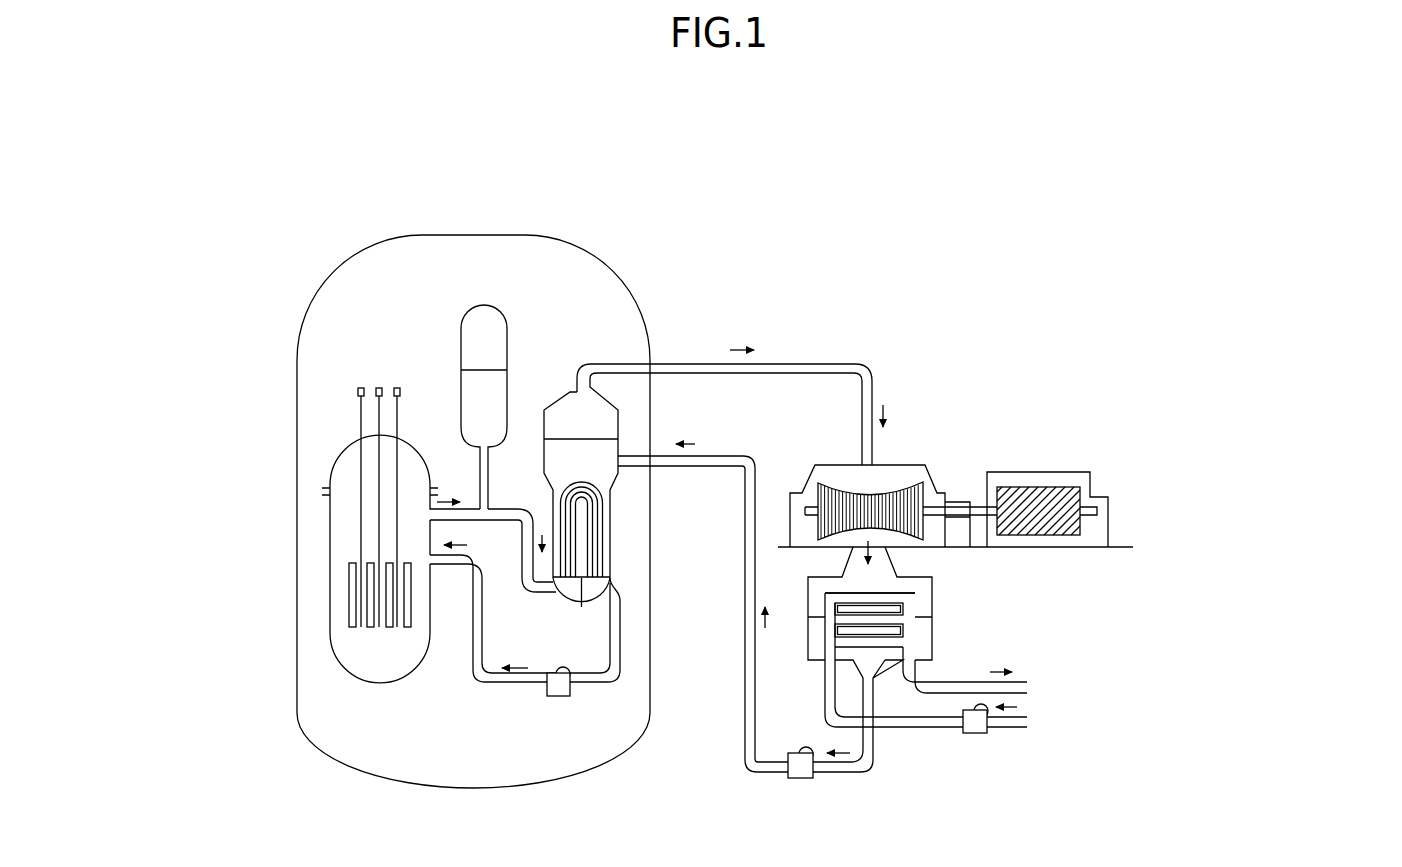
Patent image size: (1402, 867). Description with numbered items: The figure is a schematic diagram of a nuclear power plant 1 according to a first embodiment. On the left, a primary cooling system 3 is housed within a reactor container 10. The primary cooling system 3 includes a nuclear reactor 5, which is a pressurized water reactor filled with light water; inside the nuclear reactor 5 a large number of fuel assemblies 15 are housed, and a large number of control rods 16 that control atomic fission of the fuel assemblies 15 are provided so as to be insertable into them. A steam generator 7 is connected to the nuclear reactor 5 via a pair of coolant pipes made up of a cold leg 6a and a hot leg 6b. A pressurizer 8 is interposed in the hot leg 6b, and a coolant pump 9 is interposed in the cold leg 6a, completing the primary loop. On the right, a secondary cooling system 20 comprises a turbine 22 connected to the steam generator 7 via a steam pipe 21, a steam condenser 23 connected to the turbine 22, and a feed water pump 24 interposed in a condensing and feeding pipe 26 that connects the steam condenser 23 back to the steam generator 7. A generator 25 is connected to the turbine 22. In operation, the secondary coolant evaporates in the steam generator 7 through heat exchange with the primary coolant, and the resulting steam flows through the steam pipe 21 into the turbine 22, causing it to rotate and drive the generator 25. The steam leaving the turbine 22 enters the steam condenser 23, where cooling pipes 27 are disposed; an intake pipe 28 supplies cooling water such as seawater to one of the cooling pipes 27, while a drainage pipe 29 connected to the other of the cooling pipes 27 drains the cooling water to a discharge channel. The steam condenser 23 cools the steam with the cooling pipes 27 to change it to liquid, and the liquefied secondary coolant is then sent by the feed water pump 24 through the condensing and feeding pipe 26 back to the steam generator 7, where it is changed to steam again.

The nuclear power plant 1 is at (284, 133).
The reactor container 10 is at (378, 253).
The primary cooling system 3 is at (318, 349).
The nuclear reactor 5 is at (333, 460).
The control rods 16 is at (382, 410).
The fuel assemblies 15 is at (405, 630).
The pressurizer 8 is at (460, 330).
The steam generator 7 is at (563, 392).
The cold leg 6a is at (493, 686).
The hot leg 6b is at (518, 507).
The coolant pump 9 is at (558, 698).
The secondary cooling system 20 is at (944, 348).
The steam pipe 21 is at (856, 362).
The turbine 22 is at (935, 456).
The generator 25 is at (1105, 468).
The steam condenser 23 is at (946, 603).
The cooling pipes 27 is at (823, 593).
The drainage pipe 29 is at (952, 680).
The intake pipe 28 is at (915, 730).
The condensing and feeding pipe 26 is at (743, 747).
The feed water pump 24 is at (800, 780).